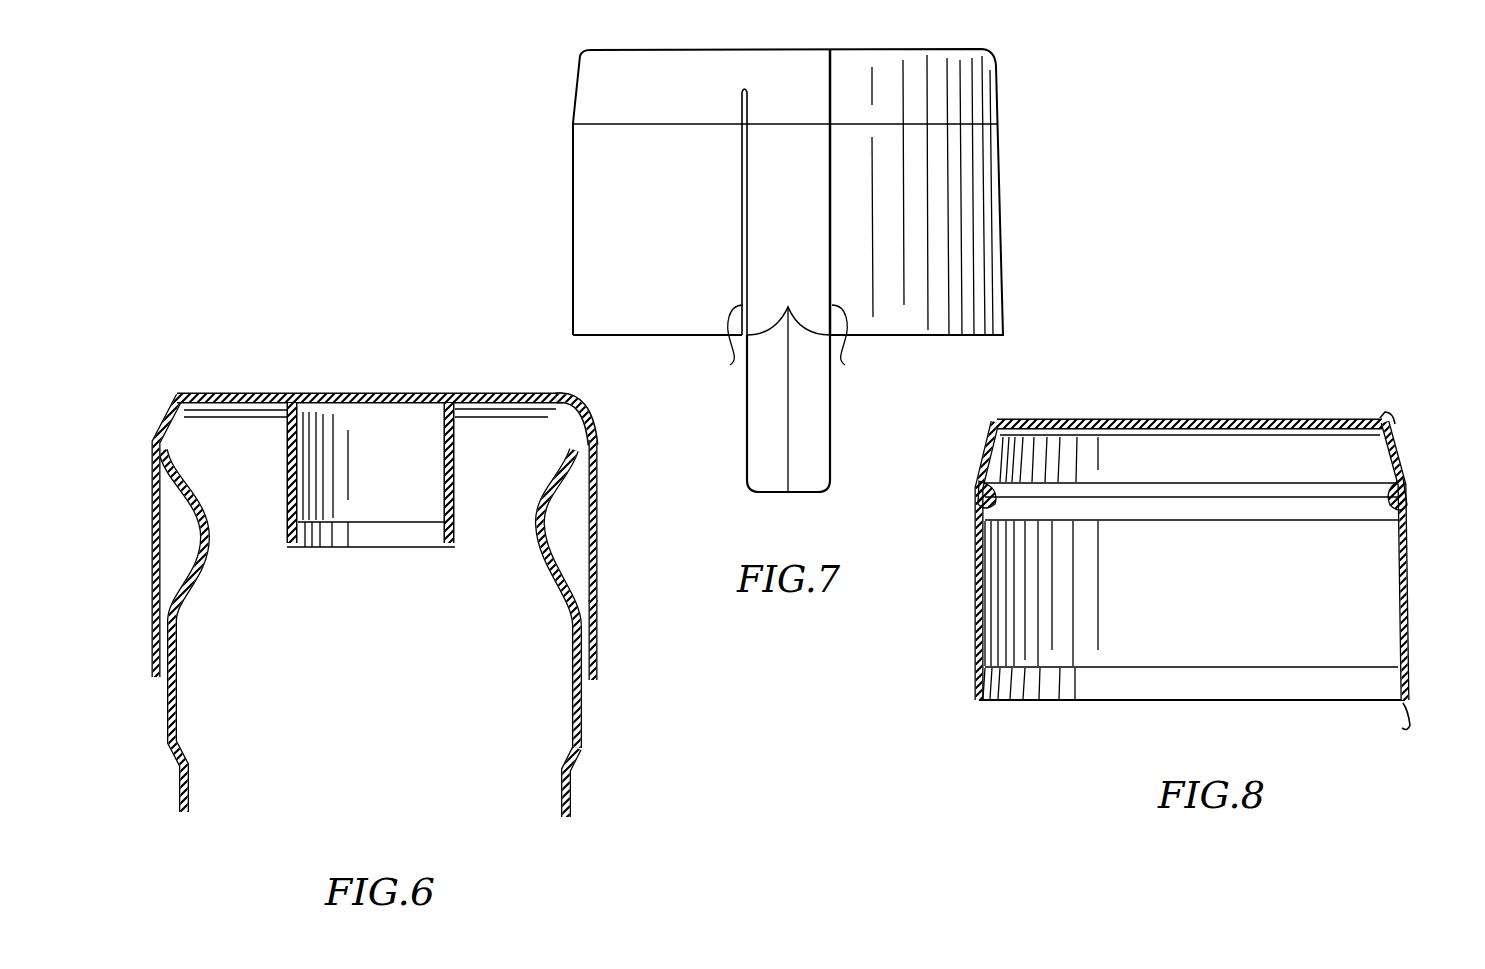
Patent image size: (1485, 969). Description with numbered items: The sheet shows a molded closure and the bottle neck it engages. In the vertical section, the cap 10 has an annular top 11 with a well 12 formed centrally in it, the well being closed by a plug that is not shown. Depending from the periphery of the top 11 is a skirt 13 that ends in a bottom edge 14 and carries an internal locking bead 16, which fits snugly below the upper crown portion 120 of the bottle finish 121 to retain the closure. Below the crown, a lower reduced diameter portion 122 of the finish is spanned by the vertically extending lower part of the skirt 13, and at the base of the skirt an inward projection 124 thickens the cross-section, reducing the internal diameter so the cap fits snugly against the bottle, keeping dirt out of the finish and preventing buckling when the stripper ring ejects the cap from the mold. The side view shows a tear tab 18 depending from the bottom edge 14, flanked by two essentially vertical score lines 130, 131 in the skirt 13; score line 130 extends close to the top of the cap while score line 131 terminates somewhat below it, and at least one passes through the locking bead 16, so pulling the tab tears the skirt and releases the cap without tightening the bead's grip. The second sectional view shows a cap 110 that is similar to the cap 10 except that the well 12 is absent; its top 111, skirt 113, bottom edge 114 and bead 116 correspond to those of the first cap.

In FIG. 6, the cap 10 is at (606, 432).
In FIG. 7, the cap 10 is at (1010, 75).
In FIG. 6, the top 11 is at (473, 395).
In FIG. 6, the well 12 is at (445, 478).
In FIG. 6, the skirt 13 is at (596, 560).
In FIG. 7, the skirt 13 is at (670, 273).
In FIG. 6, the bottom edge 14 is at (588, 684).
In FIG. 6, the internal locking bead 16 is at (586, 478).
In FIG. 7, the tear tab 18 is at (818, 443).
In FIG. 6, the upper crown portion 120 is at (565, 396).
In FIG. 6, the bottle finish 121 is at (575, 797).
In FIG. 6, the lower reduced diameter portion 122 is at (548, 525).
In FIG. 6, the inward projection 124 is at (585, 657).
In FIG. 7, the score line 130 is at (868, 343).
In FIG. 7, the score line 131 is at (719, 343).
In FIG. 8, the cap 110 is at (1406, 410).
In FIG. 8, the top wall 111 is at (1198, 418).
In FIG. 8, the side wall 113 is at (1408, 560).
In FIG. 8, the bottom edge 114 is at (1389, 721).
In FIG. 8, the bead 116 is at (1407, 503).